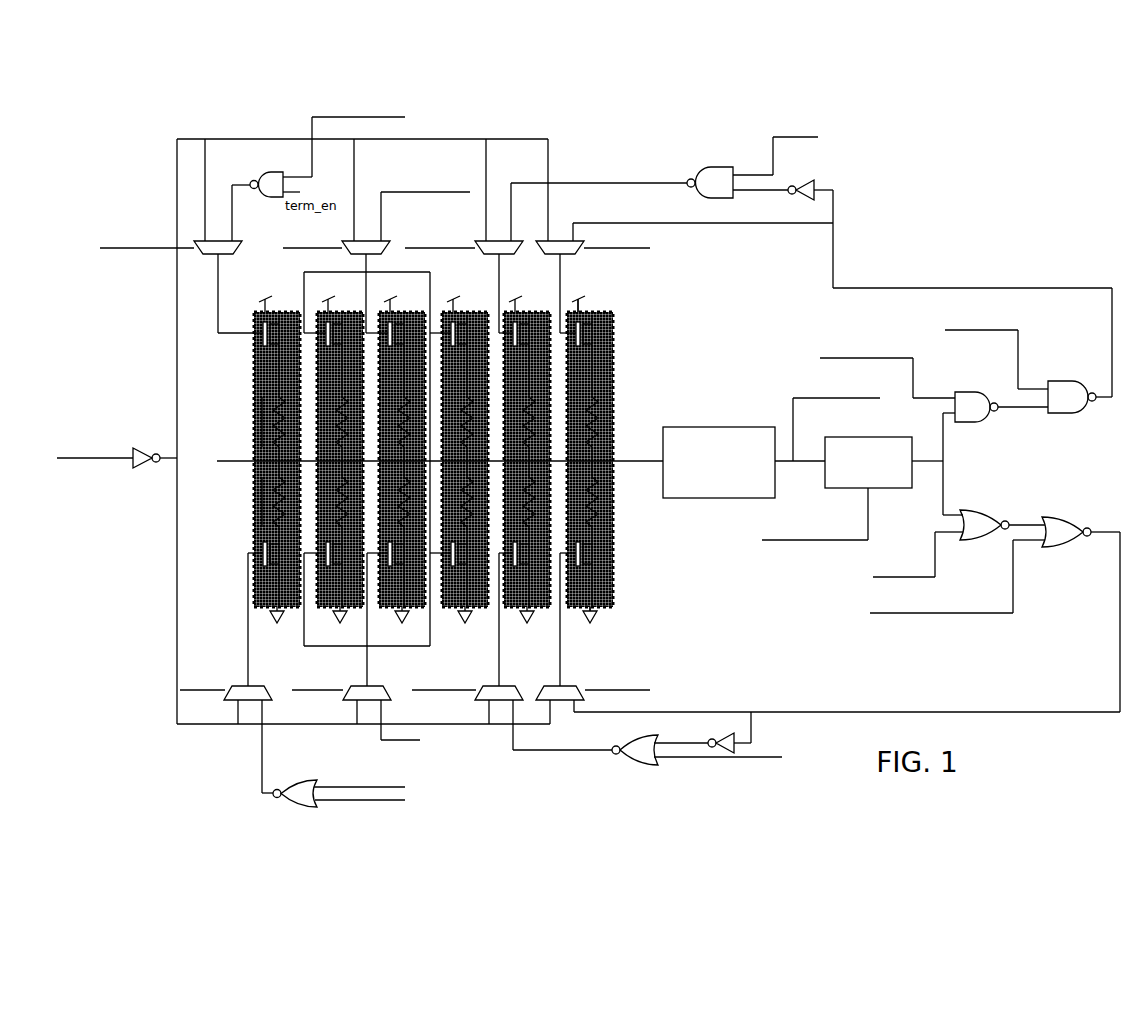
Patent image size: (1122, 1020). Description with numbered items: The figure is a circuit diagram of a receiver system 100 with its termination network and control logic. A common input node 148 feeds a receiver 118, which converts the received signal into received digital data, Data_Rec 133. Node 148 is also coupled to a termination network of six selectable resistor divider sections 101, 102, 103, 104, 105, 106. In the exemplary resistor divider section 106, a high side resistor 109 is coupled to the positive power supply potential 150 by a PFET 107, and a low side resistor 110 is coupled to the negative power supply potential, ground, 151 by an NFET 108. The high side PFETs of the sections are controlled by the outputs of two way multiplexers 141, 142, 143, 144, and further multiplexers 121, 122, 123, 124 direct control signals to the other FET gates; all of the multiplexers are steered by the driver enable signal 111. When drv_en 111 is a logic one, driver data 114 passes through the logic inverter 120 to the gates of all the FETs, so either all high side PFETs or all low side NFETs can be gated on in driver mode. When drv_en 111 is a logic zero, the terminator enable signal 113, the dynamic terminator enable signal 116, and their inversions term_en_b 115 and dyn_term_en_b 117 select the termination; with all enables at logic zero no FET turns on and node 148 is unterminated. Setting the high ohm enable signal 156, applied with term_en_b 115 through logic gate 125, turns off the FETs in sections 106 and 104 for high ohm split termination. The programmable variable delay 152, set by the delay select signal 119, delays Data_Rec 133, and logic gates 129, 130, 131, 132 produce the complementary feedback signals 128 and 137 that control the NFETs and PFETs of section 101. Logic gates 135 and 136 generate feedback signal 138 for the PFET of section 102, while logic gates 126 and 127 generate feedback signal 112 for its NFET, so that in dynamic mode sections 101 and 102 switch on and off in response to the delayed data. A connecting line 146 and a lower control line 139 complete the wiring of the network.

The receiver system 100 is at (611, 97).
The resistor divider section 101 is at (608, 359).
The resistor divider section 102 is at (540, 611).
The resistor divider section 103 is at (456, 311).
The resistor divider section 104 is at (383, 608).
The resistor divider section 105 is at (352, 312).
The resistor divider section 106 is at (268, 615).
The PFET 107 is at (262, 328).
The NFET 108 is at (258, 553).
The high side resistor 109 is at (257, 419).
The low side resistor 110 is at (257, 495).
The driver enable signal 111 is at (136, 231).
The feedback signal 112 is at (355, 97).
The terminator enable signal 113 is at (974, 335).
The driver data 114 is at (75, 437).
The term_en_b control signal 115 is at (372, 827).
The dynamic terminator enable signal 116 is at (815, 117).
The dyn_term_en_b control signal 117 is at (838, 578).
The receiver 118 is at (694, 427).
The delay select signal 119 is at (762, 541).
The logic inverter 120 is at (146, 474).
The multiplexer 121 is at (266, 701).
The multiplexer 122 is at (386, 701).
The multiplexer 123 is at (497, 684).
The multiplexer 124 is at (567, 685).
The logic gate 125 is at (292, 812).
The logic gate 126 is at (656, 769).
The logic gate 127 is at (752, 733).
The feedback signal 128 is at (930, 713).
The logic gate 129 is at (1069, 518).
The logic gate 130 is at (975, 542).
The logic gate 131 is at (985, 420).
The logic gate 132 is at (1060, 381).
The received digital data 133 is at (787, 373).
The logic gate 135 is at (823, 185).
The logic gate 136 is at (721, 167).
The feedback signal 137 is at (905, 291).
The feedback signal 138 is at (634, 181).
The ground/control line 139 is at (200, 726).
The multiplexer 141 is at (244, 255).
The multiplexer 142 is at (384, 241).
The multiplexer 143 is at (511, 257).
The multiplexer 144 is at (579, 257).
The control line 146 is at (398, 274).
The common input node 148 is at (637, 468).
The positive power supply potential 150 is at (600, 301).
The negative power supply potential 151 is at (597, 620).
The programmable variable delay 152 is at (874, 437).
The high ohm enable signal 156 is at (405, 776).